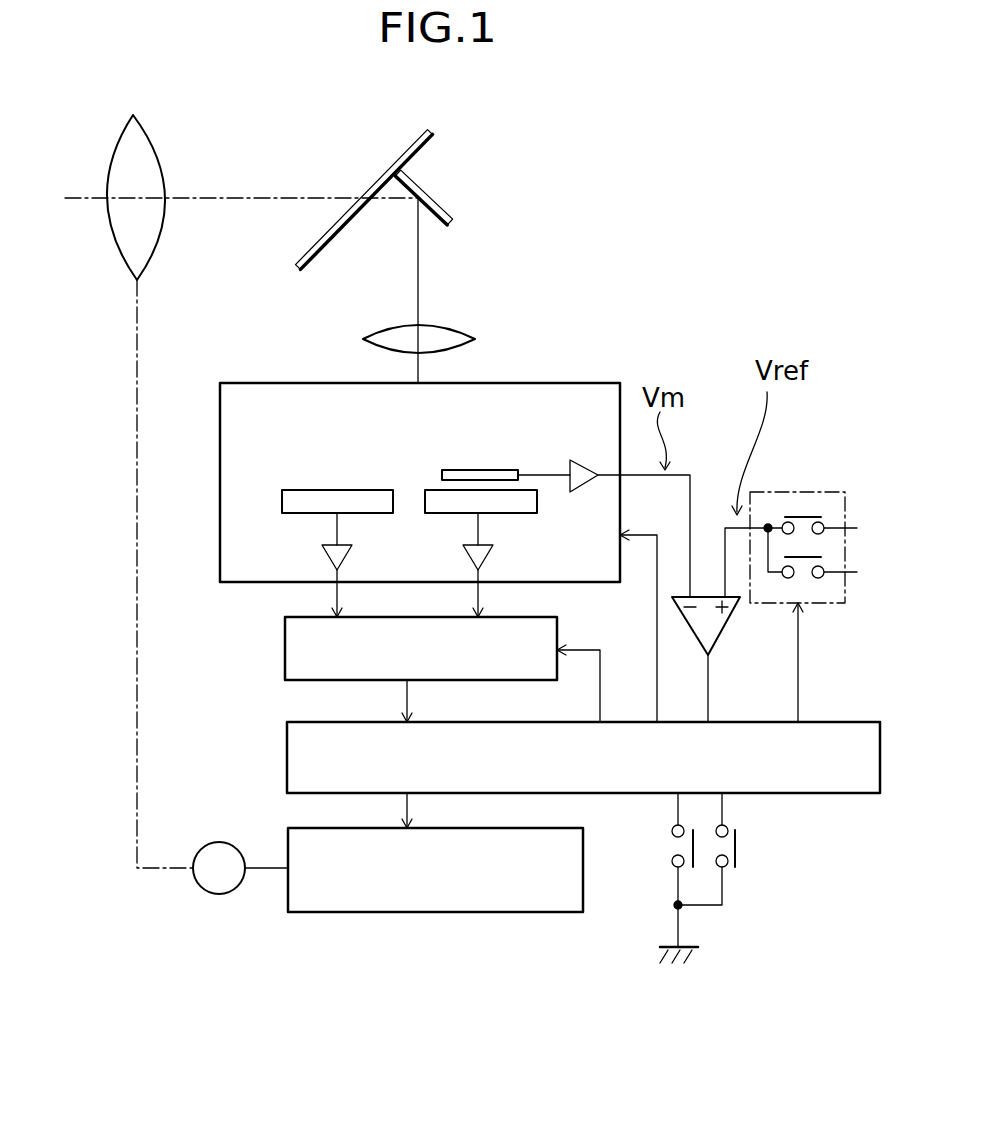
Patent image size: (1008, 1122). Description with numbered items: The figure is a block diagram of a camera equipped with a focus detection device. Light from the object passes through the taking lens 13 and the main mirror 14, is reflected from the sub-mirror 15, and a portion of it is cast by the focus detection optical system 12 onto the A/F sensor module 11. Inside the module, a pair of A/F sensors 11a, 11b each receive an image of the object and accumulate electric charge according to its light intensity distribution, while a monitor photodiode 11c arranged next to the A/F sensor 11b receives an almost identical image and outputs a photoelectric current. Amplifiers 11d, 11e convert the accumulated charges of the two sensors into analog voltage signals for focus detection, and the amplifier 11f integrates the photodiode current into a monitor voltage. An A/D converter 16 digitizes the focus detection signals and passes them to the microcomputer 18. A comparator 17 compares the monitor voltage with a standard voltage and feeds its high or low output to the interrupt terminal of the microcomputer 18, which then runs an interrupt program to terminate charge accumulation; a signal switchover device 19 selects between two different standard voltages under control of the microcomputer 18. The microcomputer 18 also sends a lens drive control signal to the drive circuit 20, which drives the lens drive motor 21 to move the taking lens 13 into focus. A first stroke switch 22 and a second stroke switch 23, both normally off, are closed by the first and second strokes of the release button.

The A/F sensor module 11 is at (585, 383).
The A/F sensor 11a is at (282, 505).
The A/F sensor 11b is at (505, 515).
The monitor photodiode 11c is at (520, 480).
The amplifier 11d is at (325, 560).
The amplifier 11e is at (463, 550).
The amplifier 11f is at (582, 468).
The focus detection optical system 12 is at (398, 320).
The taking lens 13 is at (140, 142).
The main mirror 14 is at (403, 158).
The sub-mirror 15 is at (445, 203).
The A/D converter 16 is at (285, 660).
The comparator 17 is at (728, 618).
The microcomputer 18 is at (845, 722).
The signal switchover device 19 is at (803, 490).
The drive circuit 20 is at (368, 913).
The lens drive motor 21 is at (219, 894).
The first stroke switch 22 is at (672, 856).
The second stroke switch 23 is at (745, 847).